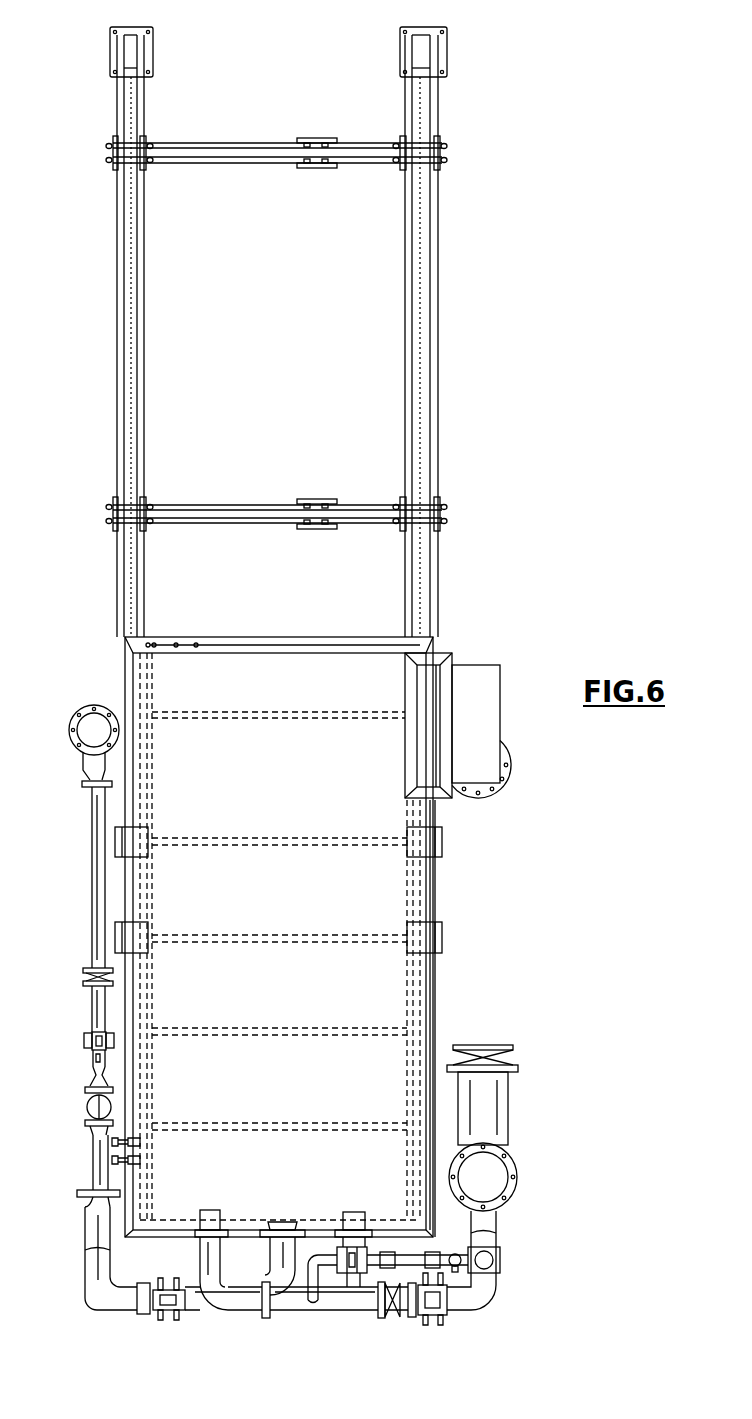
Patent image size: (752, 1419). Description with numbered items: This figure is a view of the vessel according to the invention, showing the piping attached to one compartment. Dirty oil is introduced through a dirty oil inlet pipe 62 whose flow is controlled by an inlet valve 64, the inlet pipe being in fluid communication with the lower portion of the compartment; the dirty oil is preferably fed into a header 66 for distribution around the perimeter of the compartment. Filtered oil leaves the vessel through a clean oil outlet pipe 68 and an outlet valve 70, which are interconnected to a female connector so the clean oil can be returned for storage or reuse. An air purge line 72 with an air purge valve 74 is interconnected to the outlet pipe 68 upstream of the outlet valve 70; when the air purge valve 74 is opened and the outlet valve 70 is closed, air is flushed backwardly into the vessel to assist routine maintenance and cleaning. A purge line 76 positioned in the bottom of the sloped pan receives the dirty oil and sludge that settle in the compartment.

The dirty oil inlet pipe 62 is at (93, 1168).
The inlet valve 64 is at (85, 1105).
The header 66 is at (122, 1038).
The clean oil outlet pipe 68 is at (295, 1313).
The outlet valve 70 is at (445, 1315).
The air purge line 72 is at (322, 1278).
The air purge valve 74 is at (353, 1273).
The purge line 76 is at (88, 1245).